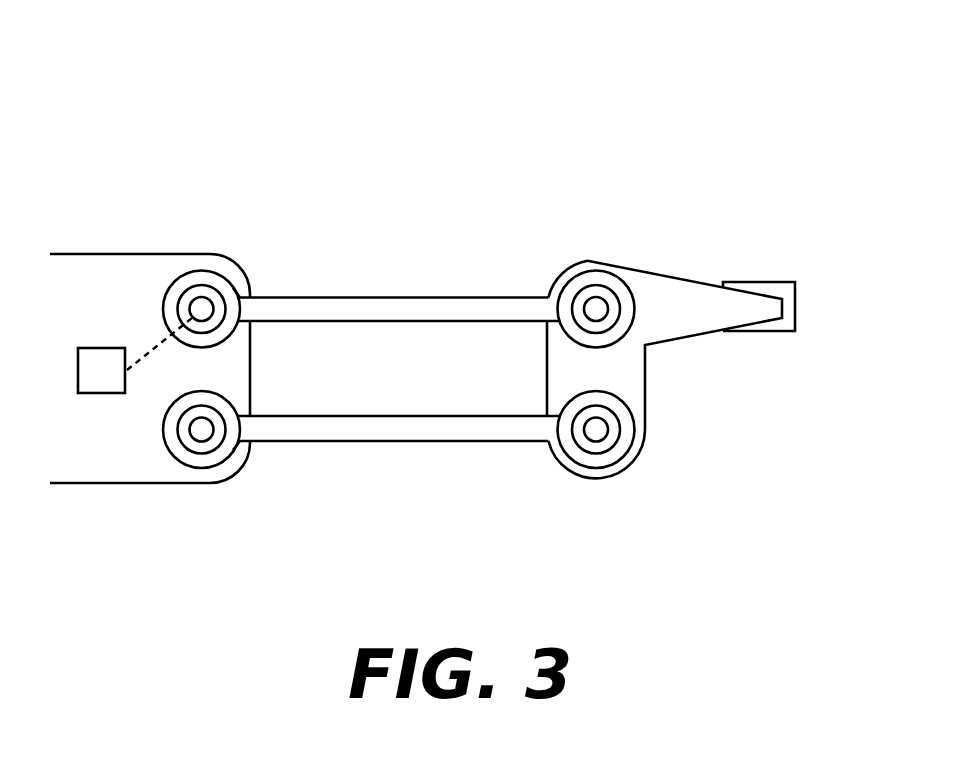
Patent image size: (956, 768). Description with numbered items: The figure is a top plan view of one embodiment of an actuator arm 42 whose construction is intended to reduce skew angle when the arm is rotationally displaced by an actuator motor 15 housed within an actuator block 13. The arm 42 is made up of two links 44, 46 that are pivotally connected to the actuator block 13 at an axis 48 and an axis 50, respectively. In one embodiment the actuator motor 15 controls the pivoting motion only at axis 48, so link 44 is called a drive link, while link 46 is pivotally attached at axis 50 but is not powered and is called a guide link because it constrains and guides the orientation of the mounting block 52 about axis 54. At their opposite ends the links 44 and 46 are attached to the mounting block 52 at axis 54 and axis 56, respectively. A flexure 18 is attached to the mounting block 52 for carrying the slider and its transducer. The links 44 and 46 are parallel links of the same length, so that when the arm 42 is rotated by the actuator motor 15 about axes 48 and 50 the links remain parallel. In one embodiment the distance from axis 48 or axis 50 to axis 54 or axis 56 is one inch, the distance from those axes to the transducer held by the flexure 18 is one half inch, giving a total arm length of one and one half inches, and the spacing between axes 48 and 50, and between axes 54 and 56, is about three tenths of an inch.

The actuator block 13 is at (122, 280).
The actuator motor 15 is at (103, 365).
The flexure 18 is at (795, 305).
The actuator arm 42 is at (450, 117).
The drive link 44 is at (393, 308).
The guide link 46 is at (410, 428).
The axis 48 is at (205, 312).
The axis 50 is at (203, 433).
The mounting block 52 is at (682, 317).
The axis 54 is at (597, 307).
The axis 56 is at (596, 431).